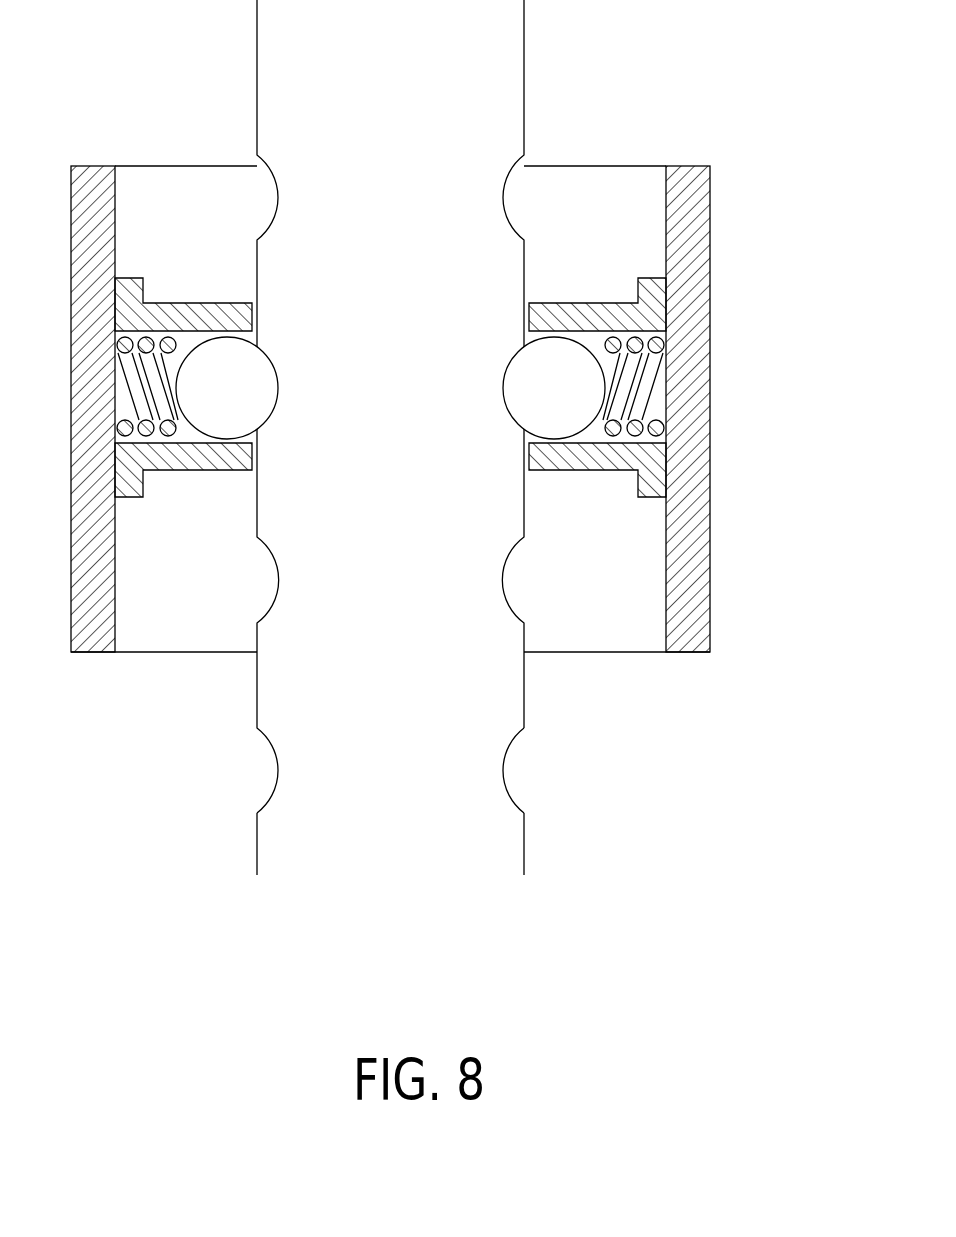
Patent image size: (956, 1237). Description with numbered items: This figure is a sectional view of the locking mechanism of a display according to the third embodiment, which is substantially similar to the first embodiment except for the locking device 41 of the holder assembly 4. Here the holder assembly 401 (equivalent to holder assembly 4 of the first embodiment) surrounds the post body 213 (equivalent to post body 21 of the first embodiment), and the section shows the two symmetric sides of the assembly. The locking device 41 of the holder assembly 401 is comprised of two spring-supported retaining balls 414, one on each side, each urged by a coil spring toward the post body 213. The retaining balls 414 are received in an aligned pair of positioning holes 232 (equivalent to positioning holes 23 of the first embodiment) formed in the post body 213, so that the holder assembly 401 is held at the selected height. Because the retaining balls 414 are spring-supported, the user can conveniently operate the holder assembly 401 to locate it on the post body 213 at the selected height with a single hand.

The holder assembly 4 is at (451, 409).
The holder assembly 401 is at (710, 208).
The locking device 41 is at (402, 526).
The spring-supported retaining ball 414 is at (213, 423).
The positioning holes 23 is at (469, 406).
The positioning holes 232 is at (508, 762).
The post body 21 is at (468, 844).
The post body 213 is at (510, 846).